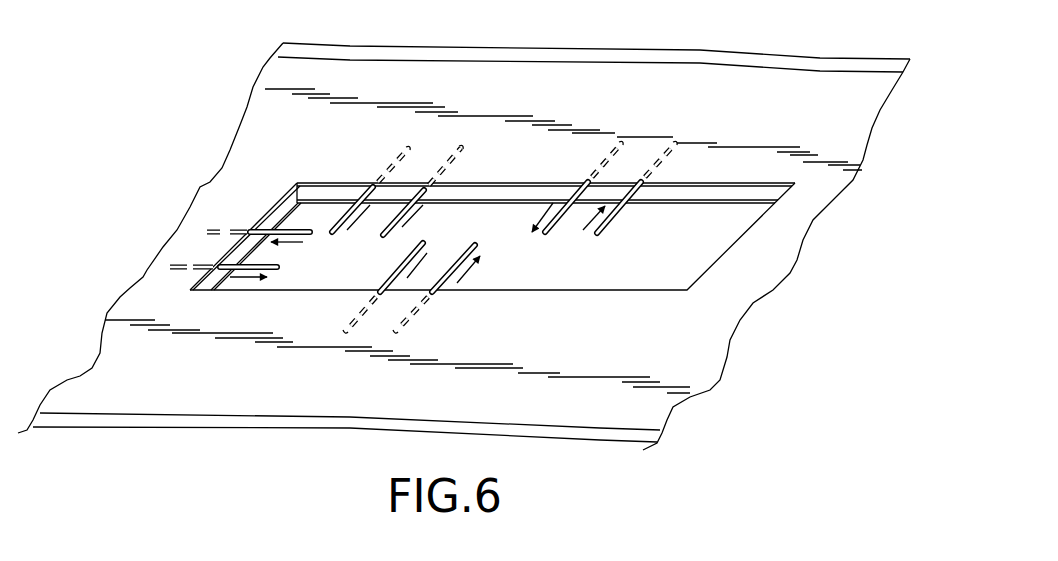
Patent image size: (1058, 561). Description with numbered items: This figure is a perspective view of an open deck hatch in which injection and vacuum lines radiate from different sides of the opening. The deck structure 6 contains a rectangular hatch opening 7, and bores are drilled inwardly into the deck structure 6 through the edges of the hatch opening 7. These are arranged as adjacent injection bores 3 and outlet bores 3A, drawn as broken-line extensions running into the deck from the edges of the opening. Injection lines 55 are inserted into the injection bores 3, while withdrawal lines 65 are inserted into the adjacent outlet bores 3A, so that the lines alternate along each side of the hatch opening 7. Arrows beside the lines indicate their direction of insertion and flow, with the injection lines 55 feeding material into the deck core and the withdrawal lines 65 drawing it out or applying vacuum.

The deck structure 6 is at (855, 56).
The hatch opening 7 is at (662, 276).
The injection lines 55 is at (305, 235).
The withdrawal lines 65 is at (270, 272).
The injection bores 3 is at (648, 167).
The outlet bores 3A is at (608, 162).